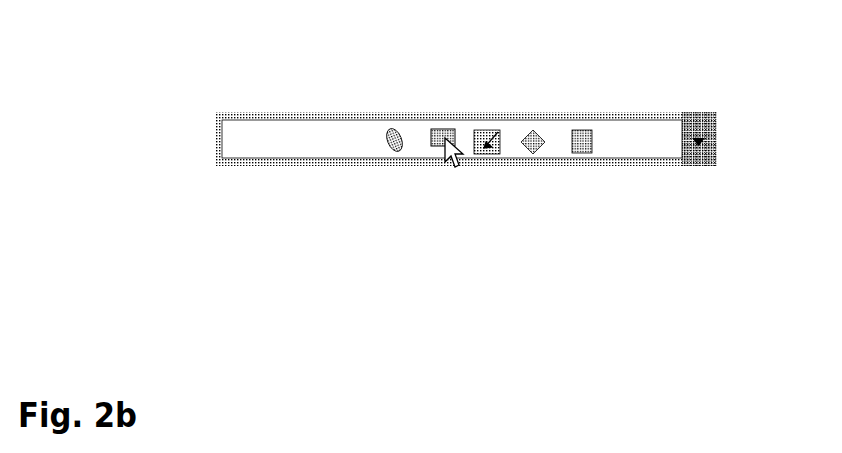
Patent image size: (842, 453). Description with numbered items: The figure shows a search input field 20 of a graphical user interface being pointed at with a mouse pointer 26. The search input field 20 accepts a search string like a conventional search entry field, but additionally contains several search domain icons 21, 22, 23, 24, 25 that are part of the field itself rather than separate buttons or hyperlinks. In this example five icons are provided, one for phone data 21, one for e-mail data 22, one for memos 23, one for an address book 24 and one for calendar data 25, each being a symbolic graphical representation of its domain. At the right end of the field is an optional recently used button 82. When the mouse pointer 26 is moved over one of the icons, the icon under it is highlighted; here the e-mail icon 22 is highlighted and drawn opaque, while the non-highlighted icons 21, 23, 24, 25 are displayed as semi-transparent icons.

The search input field 20 is at (288, 120).
The search domain icon for phone data 21 is at (403, 153).
The search domain icon for e-mail data 22 is at (440, 130).
The search domain icon for memos 23 is at (487, 153).
The search domain icon for address book 24 is at (533, 130).
The search domain icon for calendar data 25 is at (582, 153).
The mouse pointer 26 is at (452, 167).
The recently used button 82 is at (708, 143).